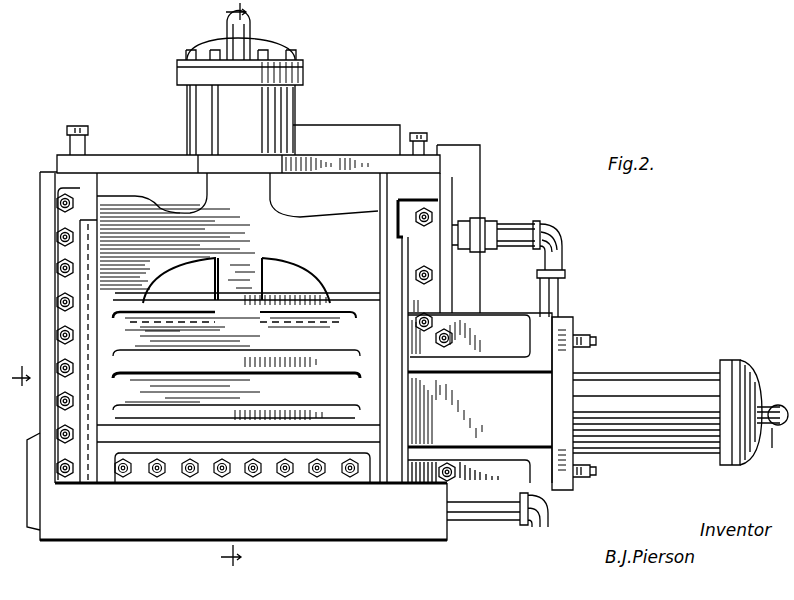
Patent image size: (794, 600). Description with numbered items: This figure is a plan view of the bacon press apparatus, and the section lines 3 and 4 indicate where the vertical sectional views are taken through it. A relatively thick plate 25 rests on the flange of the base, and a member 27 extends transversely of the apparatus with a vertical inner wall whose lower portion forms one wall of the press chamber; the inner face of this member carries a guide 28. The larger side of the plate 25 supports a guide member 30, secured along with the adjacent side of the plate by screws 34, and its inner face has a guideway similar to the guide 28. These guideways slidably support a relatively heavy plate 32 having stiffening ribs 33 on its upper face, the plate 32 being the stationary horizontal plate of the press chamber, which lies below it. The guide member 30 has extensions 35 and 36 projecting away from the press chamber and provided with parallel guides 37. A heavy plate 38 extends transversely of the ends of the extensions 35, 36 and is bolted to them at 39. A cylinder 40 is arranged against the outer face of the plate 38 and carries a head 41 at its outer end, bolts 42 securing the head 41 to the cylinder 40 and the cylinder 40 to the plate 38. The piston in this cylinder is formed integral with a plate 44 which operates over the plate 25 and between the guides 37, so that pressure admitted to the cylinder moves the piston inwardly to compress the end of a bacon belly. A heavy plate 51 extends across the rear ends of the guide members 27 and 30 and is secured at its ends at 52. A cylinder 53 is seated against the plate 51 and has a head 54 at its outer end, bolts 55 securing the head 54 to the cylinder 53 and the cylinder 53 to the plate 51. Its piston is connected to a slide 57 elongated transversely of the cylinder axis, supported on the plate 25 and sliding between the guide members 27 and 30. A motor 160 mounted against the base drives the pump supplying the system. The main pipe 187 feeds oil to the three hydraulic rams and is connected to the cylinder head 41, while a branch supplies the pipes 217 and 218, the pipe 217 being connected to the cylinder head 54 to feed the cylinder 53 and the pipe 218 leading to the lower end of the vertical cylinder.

The section line 3— 3 is at (241, 295).
The section line 4— 4 is at (395, 418).
The plate 25 is at (42, 333).
The member 27 is at (88, 282).
The guide 28 is at (58, 268).
The guide member 30 is at (405, 223).
The plate 32 is at (236, 396).
The stiffening ribs 33 is at (318, 300).
The screws 34 is at (430, 214).
The extension 35 is at (493, 320).
The extension 36 is at (497, 484).
The guides 37 is at (493, 370).
The plate 38 is at (566, 320).
The bolts 39 is at (590, 335).
The cylinder 40 is at (613, 386).
The head 41 is at (740, 360).
The bolts 42 is at (665, 376).
The plate 44 is at (480, 408).
The plate 51 is at (355, 160).
The securing means 52 is at (78, 126).
The cylinder 53 is at (200, 107).
The head 54 is at (303, 70).
The bolts 55 is at (297, 112).
The slide 57 is at (168, 212).
The motor 160 is at (397, 125).
The pipe 187 is at (768, 405).
The pipe 217 is at (513, 226).
The pipe 218 is at (508, 525).